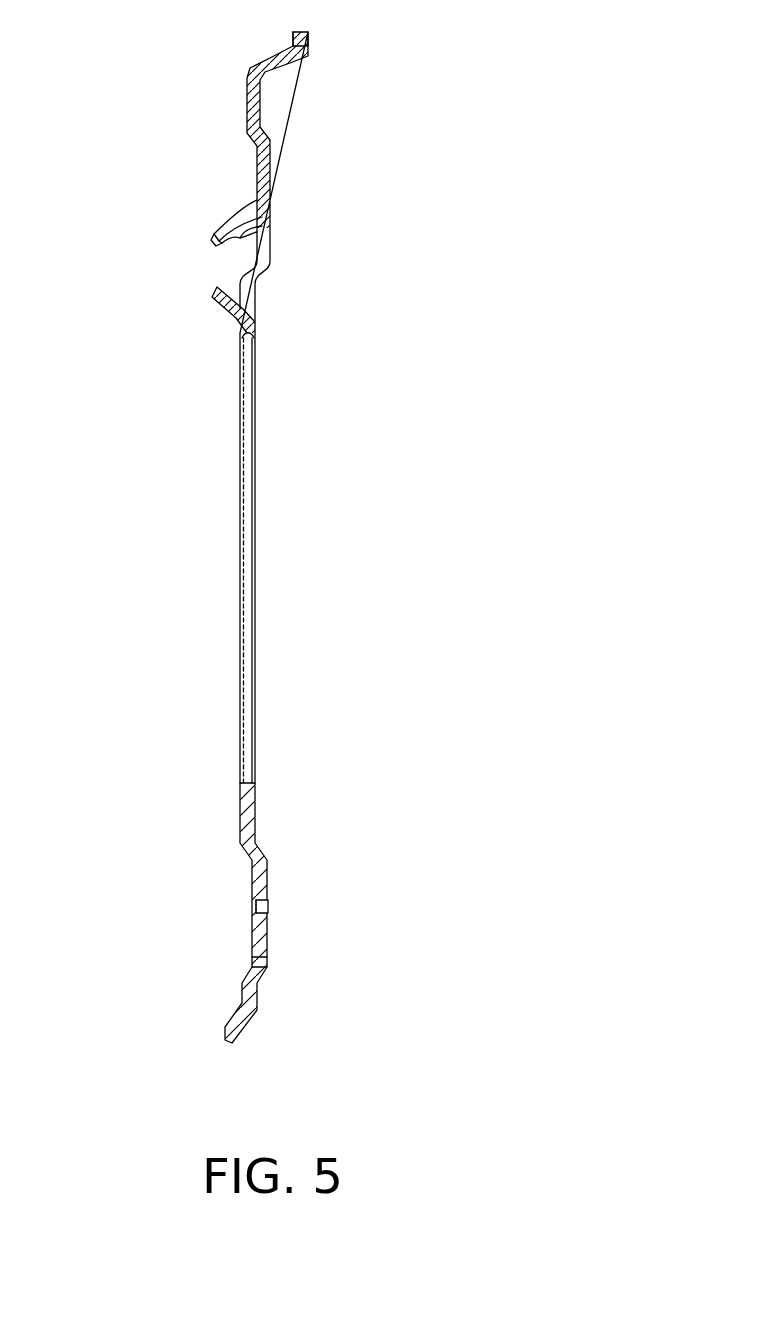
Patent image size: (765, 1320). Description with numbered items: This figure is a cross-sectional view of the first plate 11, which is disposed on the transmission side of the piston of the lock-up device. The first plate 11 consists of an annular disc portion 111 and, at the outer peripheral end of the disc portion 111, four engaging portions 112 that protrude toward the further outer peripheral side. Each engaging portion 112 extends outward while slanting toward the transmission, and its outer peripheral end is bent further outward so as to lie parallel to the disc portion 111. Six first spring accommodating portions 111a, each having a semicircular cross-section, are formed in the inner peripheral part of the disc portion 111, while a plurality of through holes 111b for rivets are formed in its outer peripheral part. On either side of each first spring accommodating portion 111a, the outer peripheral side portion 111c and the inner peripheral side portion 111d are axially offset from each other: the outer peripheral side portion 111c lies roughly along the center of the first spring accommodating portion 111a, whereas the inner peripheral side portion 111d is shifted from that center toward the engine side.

The first plate 11 is at (214, 63).
The disc portion 111 is at (268, 167).
The engaging portion 112 is at (299, 47).
The first spring accommodating portion 111a is at (265, 218).
The through hole 111b is at (268, 942).
The outer peripheral side portion 111c is at (262, 237).
The inner peripheral side portion 111d is at (250, 291).